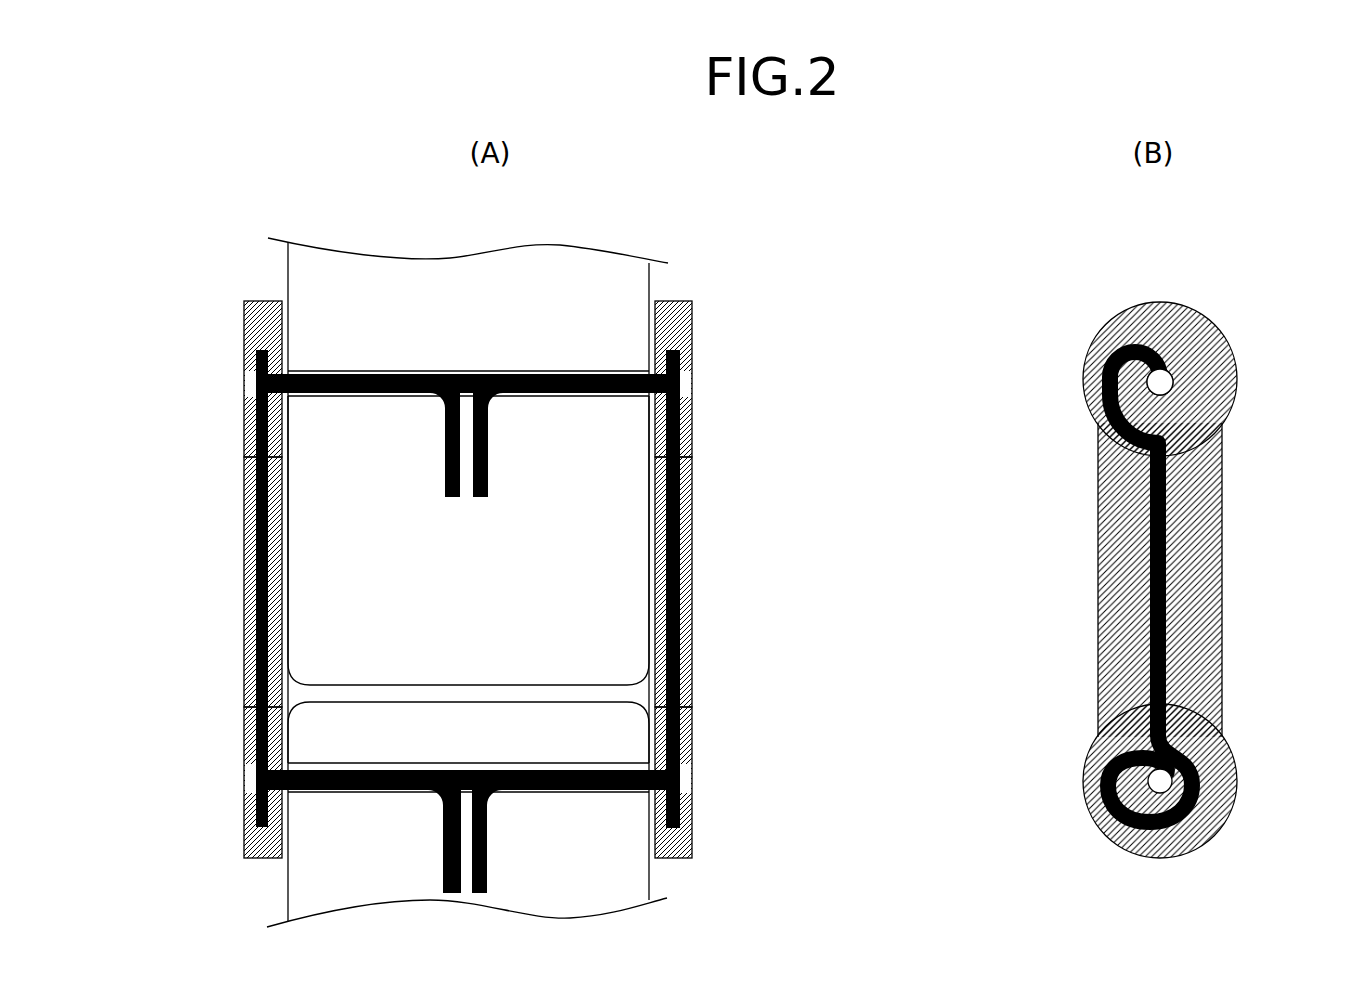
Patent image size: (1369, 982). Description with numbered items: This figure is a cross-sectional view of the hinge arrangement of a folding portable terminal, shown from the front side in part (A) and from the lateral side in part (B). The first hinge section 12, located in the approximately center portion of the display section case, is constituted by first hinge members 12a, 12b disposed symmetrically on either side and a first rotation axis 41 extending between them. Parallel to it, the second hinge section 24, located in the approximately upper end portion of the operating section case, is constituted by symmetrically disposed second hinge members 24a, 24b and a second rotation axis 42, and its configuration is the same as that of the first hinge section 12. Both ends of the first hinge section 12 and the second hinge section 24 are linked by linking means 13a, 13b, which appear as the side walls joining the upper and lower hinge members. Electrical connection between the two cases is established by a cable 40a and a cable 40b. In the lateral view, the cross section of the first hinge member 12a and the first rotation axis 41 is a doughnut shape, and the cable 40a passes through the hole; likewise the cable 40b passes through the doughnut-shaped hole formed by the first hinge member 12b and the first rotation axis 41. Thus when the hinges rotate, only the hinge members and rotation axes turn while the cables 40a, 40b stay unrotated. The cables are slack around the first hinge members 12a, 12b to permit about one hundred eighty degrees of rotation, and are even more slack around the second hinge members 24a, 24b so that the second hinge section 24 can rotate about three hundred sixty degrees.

The first hinge section 12 is at (212, 297).
The first hinge member 12a is at (692, 320).
The first hinge member 12b is at (261, 300).
The linking means 13a is at (692, 612).
The linking means 13b is at (245, 610).
The second hinge section 24 is at (212, 700).
The second hinge member 24a is at (672, 858).
The second hinge member 24b is at (250, 860).
The cable 40a is at (488, 458).
The cable 40b is at (445, 479).
The first rotation axis 41 is at (468, 376).
The second rotation axis 42 is at (467, 764).